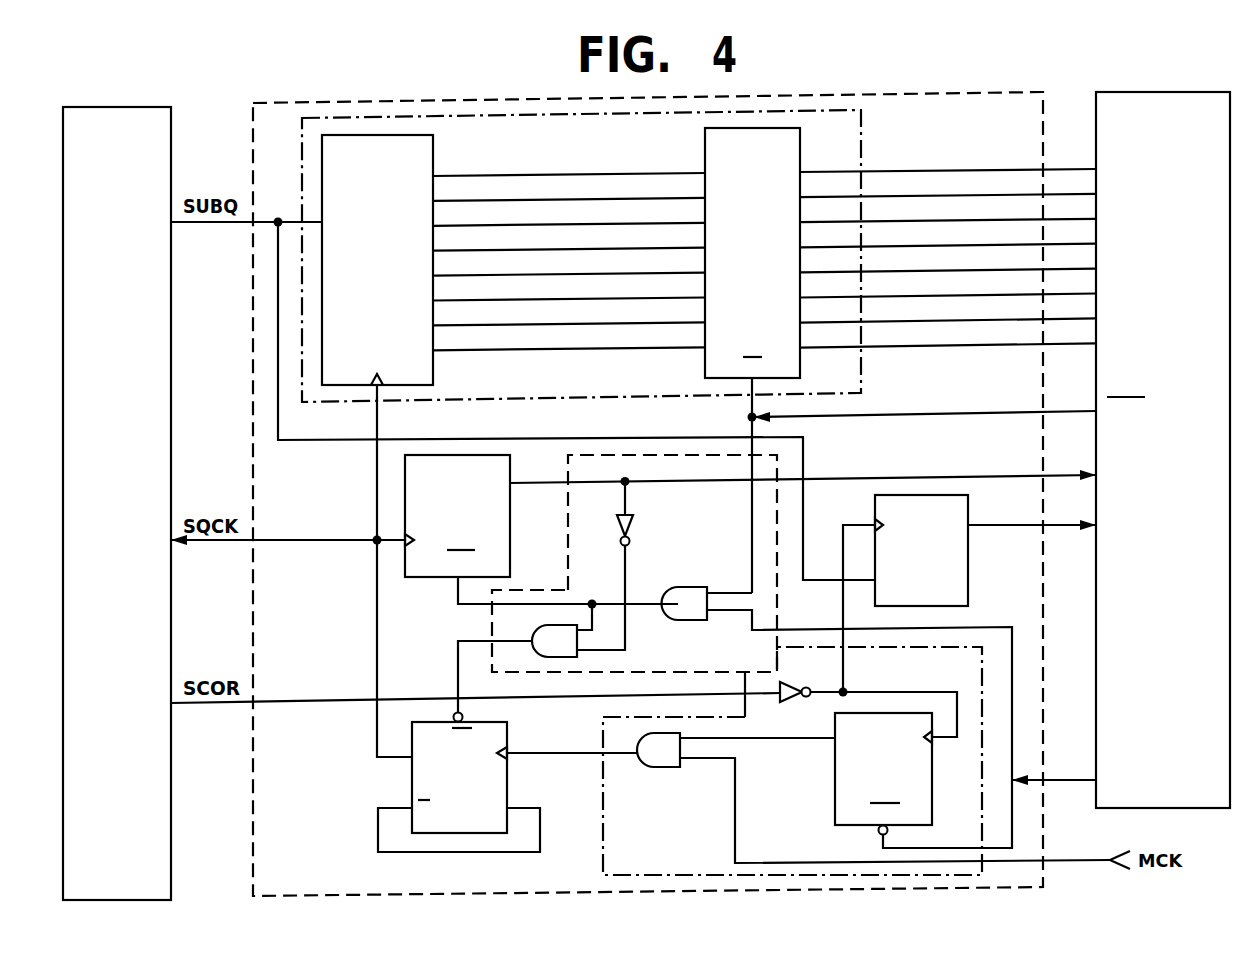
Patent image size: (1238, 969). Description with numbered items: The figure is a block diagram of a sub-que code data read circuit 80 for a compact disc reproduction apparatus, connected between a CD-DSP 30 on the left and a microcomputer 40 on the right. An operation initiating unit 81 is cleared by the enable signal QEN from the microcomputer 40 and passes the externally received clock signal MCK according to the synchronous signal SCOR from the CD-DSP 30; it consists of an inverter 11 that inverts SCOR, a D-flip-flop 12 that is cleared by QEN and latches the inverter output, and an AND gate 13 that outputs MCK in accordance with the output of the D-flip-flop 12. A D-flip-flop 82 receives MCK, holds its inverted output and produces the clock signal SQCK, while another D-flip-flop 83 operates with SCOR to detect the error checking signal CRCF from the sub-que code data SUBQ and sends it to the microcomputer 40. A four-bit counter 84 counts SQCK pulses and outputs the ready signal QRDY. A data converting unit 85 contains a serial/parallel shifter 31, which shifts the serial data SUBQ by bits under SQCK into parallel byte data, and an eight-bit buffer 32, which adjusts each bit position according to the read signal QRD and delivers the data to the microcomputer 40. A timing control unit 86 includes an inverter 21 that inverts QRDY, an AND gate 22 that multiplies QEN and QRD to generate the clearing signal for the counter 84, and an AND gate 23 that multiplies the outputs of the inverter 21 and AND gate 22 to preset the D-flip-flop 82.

The CD-DSP 30 is at (123, 108).
The microcomputer 40 is at (1140, 93).
The sub-que code data read circuit 80 is at (440, 101).
The data converting unit 85 is at (740, 112).
The serial/parallel shifter 31 is at (433, 372).
The 8-bit buffer 32 is at (703, 361).
The 4-bit counter 84 is at (422, 577).
The timing control unit 86 is at (778, 525).
The inverter 21 is at (635, 528).
The AND gate 22 is at (688, 587).
The AND gate 23 is at (547, 624).
The D-flip-flop 83 is at (968, 590).
The inverter 11 is at (785, 684).
The operation initiating unit 81 is at (603, 838).
The D-flip-flop 82 is at (505, 722).
The AND gate 13 is at (655, 767).
The D-flip-flop 12 is at (932, 803).